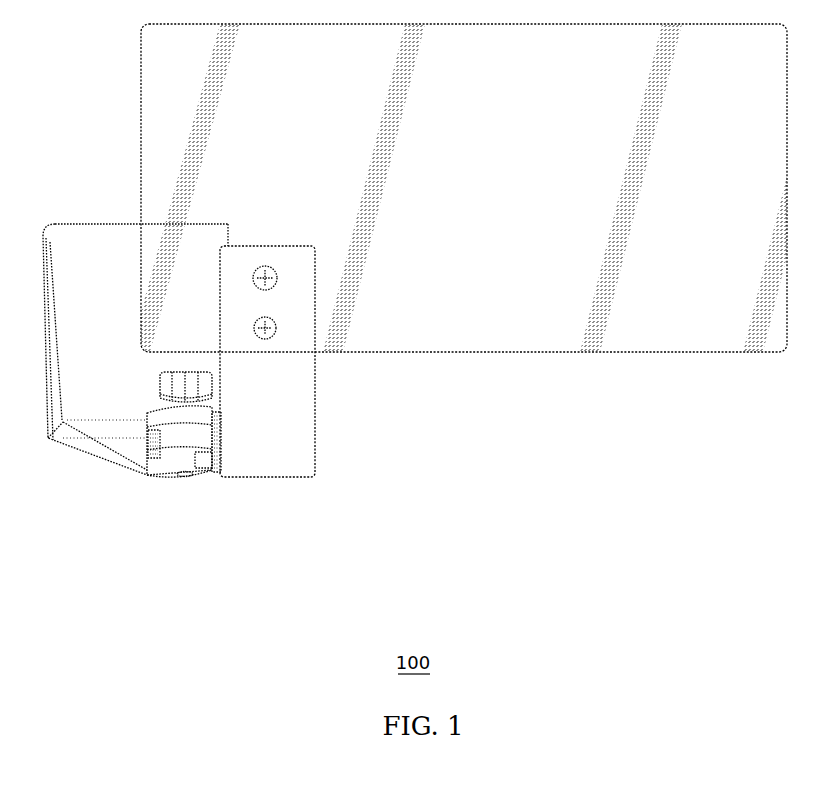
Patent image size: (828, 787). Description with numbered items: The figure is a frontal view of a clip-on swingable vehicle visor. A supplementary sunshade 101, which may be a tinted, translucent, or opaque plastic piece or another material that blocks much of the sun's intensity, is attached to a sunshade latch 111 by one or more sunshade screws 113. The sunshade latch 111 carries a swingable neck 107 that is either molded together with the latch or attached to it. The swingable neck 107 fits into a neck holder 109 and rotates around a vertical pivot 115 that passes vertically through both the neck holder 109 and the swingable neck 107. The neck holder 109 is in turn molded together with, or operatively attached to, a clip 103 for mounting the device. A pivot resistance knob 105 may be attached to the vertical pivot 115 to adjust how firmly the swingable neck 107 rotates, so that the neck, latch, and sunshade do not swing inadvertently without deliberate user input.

The supplementary sunshade 101 is at (479, 188).
The clip 103 is at (93, 260).
The pivot resistance knob 105 is at (160, 393).
The swingable neck 107 is at (187, 440).
The neck holder 109 is at (197, 458).
The sunshade latch 111 is at (283, 438).
The sunshade screws 113 is at (275, 288).
The vertical pivot 115 is at (187, 478).